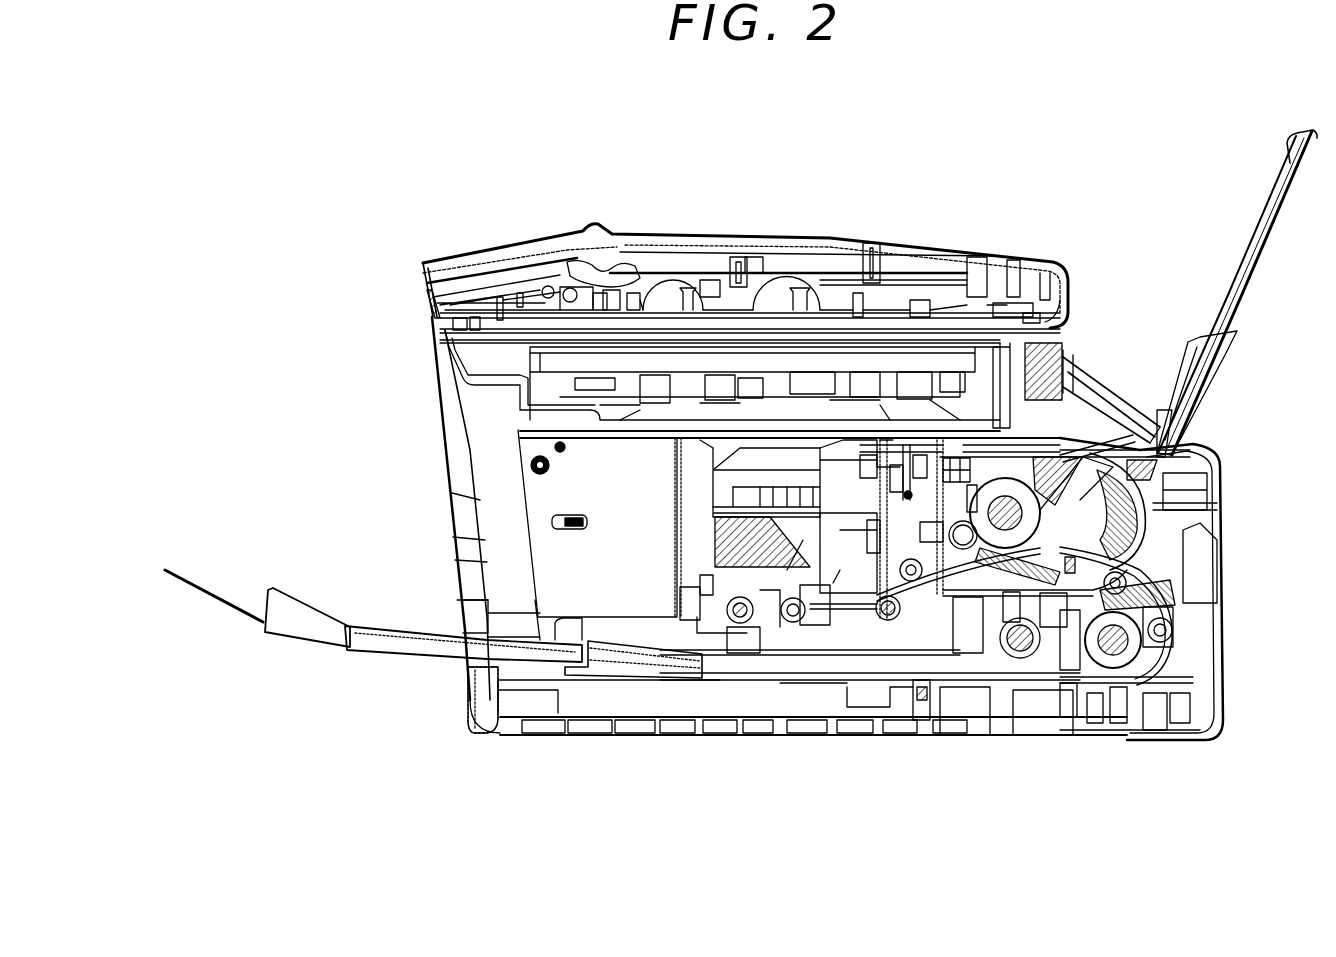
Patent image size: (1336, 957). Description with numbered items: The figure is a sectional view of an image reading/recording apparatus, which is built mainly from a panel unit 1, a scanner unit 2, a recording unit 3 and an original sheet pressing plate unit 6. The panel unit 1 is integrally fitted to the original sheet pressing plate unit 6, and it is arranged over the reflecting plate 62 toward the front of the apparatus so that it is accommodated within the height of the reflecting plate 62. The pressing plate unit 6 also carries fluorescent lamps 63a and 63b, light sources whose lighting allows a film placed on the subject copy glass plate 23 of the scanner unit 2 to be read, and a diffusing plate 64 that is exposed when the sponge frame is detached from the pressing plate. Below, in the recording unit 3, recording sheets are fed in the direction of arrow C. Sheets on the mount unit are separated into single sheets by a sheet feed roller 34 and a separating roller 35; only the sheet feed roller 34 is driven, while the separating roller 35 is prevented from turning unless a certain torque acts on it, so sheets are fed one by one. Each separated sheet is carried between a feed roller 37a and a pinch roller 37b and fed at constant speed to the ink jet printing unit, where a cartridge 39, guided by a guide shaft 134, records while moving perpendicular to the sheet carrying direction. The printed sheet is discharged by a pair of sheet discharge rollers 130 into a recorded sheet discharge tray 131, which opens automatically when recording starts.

The panel unit 1 is at (592, 228).
The scanner unit 2 is at (1067, 343).
The recording unit 3 is at (835, 690).
The original sheet pressing plate unit 6 is at (1013, 257).
The subject copy glass plate 23 is at (468, 378).
The sheet feed roller 34 is at (1063, 457).
The separating roller 35 is at (1000, 620).
The feed roller 37a is at (910, 630).
The pinch roller 37b is at (957, 620).
The cartridge 39 is at (760, 630).
The reflecting plate 62 is at (823, 283).
The fluorescent lamp 63a is at (688, 282).
The fluorescent lamp 63b is at (797, 280).
The diffusing plate 64 is at (713, 307).
The sheet discharge rollers 130 is at (692, 665).
The recorded sheet discharge tray 131 is at (420, 643).
The guide shaft 134 is at (913, 640).
The sheet feed direction C is at (1208, 267).